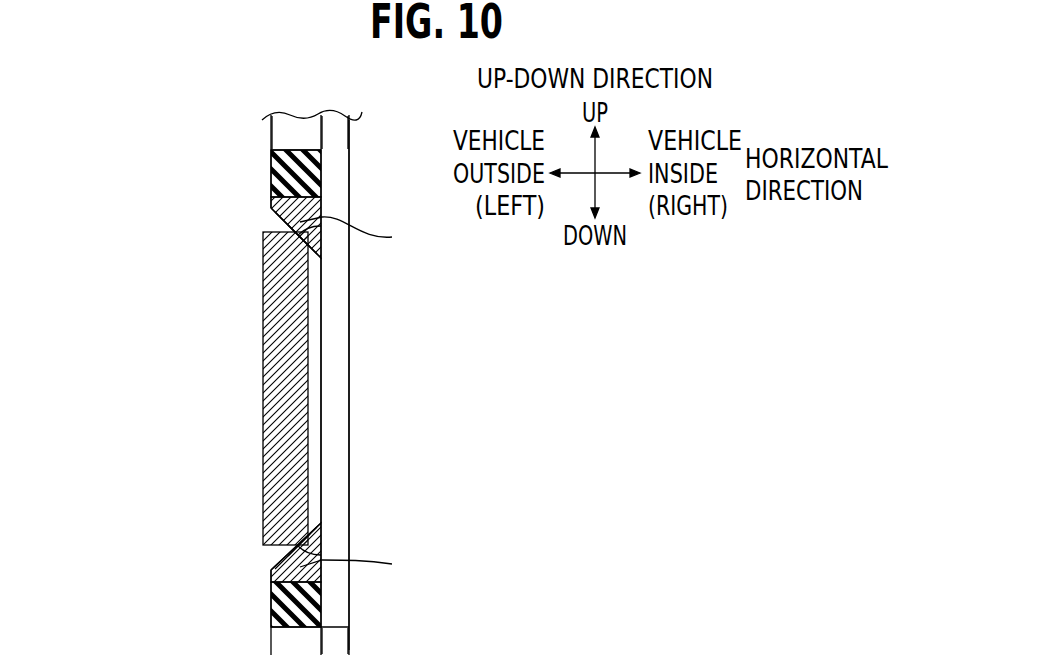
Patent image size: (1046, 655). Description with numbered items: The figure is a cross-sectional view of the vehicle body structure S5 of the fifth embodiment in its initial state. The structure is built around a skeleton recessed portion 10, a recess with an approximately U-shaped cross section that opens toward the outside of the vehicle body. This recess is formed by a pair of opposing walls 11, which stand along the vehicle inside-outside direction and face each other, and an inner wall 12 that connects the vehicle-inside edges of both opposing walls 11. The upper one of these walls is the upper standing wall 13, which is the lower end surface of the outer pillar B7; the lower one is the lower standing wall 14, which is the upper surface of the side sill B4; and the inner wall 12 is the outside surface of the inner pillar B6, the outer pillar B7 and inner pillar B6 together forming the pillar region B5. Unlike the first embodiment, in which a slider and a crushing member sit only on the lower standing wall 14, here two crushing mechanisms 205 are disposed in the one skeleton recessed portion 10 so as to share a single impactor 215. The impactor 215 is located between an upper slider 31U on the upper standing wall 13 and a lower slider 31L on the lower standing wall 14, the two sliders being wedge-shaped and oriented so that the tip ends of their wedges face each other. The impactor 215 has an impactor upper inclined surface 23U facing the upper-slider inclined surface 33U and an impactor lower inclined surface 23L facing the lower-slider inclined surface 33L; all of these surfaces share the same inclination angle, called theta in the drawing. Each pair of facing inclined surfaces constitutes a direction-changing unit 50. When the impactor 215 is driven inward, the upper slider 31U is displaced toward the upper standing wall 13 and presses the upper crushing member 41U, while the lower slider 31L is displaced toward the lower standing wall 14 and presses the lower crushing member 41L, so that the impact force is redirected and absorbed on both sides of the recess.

The skeleton recessed portion 10 is at (286, 335).
The opposing walls 11 is at (301, 371).
The inner wall 12 is at (308, 404).
The upper standing wall 13 is at (264, 156).
The lower standing wall 14 is at (298, 612).
The direction-changing unit 50 is at (296, 390).
The impactor upper inclined surface 23U is at (298, 245).
The impactor lower inclined surface 23L is at (306, 547).
The upper slider 31U is at (278, 207).
The lower slider 31L is at (278, 572).
The upper-slider inclined surface 33U is at (277, 220).
The lower-slider inclined surface 33L is at (286, 556).
The upper crushing member 41U is at (298, 158).
The lower crushing member 41L is at (280, 606).
The crushing mechanism 205 is at (178, 302).
The impactor 215 is at (277, 345).
The vehicle body structure S5 is at (223, 89).
The side sill B4 is at (332, 648).
The region B5 is at (350, 72).
The inner pillar B6 is at (340, 138).
The outer pillar B7 is at (286, 138).